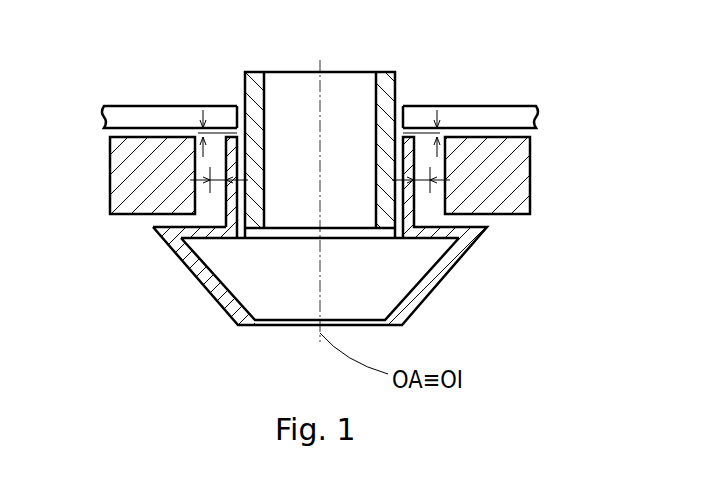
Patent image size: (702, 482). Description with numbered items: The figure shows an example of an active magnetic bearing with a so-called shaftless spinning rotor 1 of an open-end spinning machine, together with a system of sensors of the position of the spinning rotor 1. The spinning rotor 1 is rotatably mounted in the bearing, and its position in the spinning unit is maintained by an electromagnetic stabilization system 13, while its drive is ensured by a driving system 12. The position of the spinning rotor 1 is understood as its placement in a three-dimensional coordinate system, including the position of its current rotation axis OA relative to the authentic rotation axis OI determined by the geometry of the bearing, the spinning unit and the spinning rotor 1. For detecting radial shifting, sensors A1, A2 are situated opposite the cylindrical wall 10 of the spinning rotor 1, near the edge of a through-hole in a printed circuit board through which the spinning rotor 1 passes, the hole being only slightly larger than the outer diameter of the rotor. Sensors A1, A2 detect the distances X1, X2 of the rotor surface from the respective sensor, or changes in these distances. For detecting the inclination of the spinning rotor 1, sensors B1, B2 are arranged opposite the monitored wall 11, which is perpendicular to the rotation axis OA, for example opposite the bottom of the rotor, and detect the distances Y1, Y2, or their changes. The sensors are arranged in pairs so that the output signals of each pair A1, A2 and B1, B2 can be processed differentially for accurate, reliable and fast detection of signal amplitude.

The spinning rotor 1 is at (351, 241).
The cylindrical wall 10 is at (210, 232).
The monitored wall 11 is at (229, 140).
The driving system 12 is at (386, 80).
The electromagnetic stabilization system 13 is at (507, 198).
The sensor of the position of the spinning rotor A1 is at (196, 179).
The sensor of the position of the spinning rotor A2 is at (446, 179).
The sensor of the position of the spinning rotor B1 is at (233, 133).
The sensor of the position of the spinning rotor B2 is at (410, 133).
The distance X1 is at (199, 173).
The distance X2 is at (441, 174).
The distance Y1 is at (205, 118).
The distance Y2 is at (440, 110).